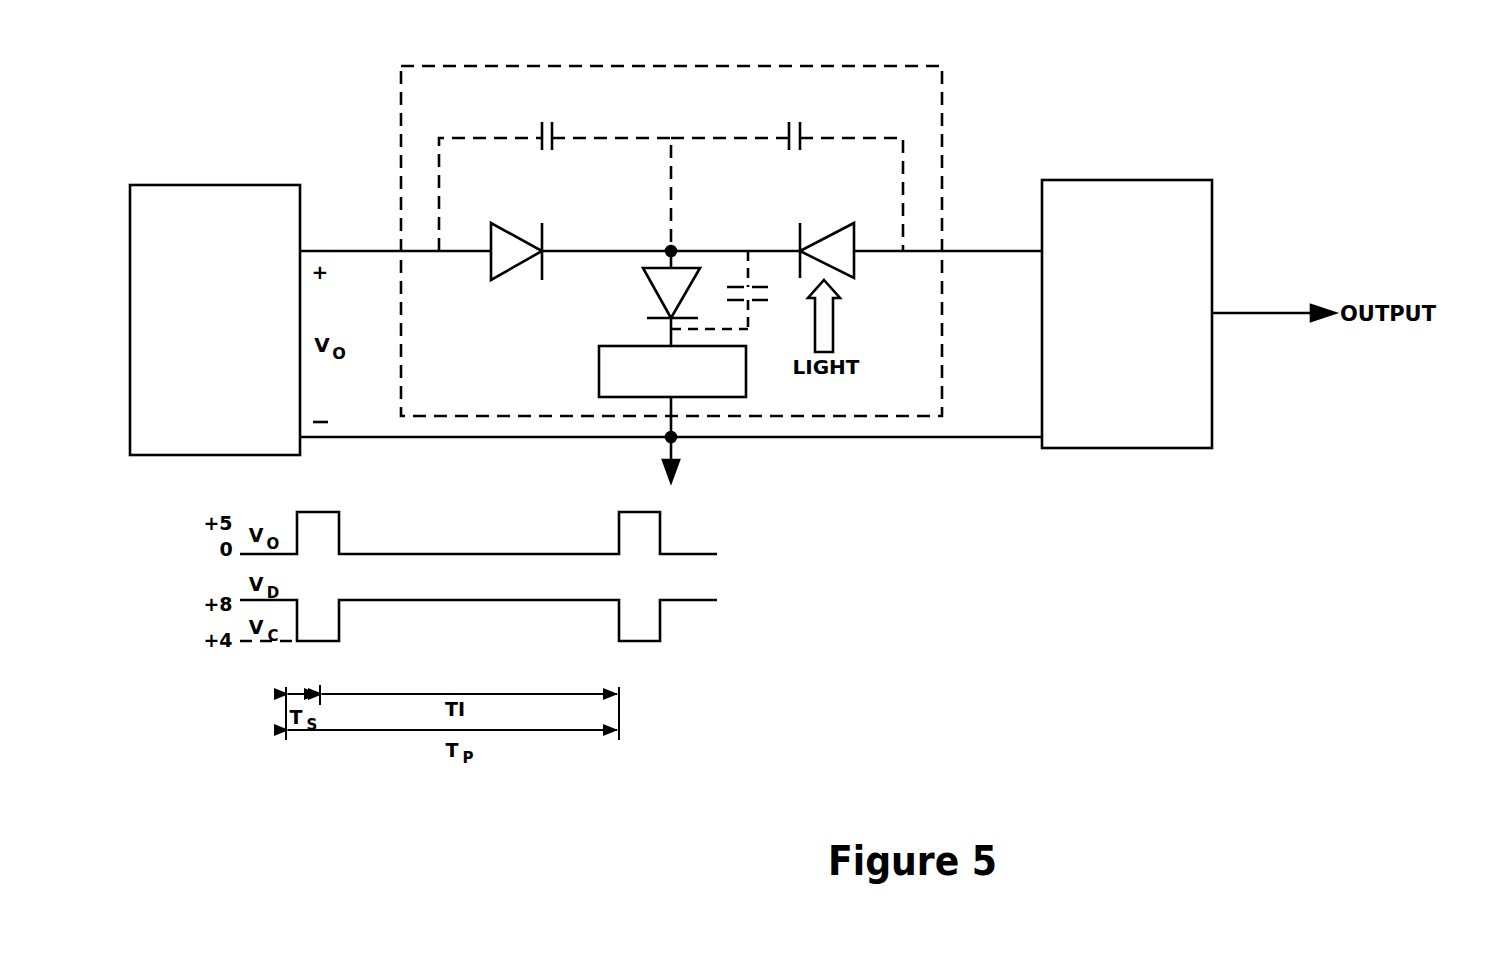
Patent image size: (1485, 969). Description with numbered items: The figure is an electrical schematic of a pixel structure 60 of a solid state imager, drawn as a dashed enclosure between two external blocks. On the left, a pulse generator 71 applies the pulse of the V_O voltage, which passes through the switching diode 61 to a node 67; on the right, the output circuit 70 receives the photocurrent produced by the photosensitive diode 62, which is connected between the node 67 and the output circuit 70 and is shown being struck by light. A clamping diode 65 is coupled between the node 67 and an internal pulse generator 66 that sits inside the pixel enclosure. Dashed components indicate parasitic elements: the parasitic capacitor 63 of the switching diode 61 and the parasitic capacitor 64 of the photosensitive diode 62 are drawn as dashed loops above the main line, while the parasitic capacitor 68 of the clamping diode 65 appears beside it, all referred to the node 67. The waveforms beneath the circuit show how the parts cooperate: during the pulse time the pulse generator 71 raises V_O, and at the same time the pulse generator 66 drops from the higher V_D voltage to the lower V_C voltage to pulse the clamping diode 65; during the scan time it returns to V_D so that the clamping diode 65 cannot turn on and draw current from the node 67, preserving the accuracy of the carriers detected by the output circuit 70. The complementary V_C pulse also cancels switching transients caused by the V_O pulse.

The pixel structure 60 is at (773, 63).
The switching diode 61 is at (518, 270).
The photosensitive diode 62 is at (859, 262).
The parasitic capacitor 63 is at (550, 117).
The parasitic capacitor 64 is at (797, 120).
The clamping diode 65 is at (647, 285).
The pulse generator 66 is at (597, 352).
The node 67 is at (679, 246).
The parasitic capacitor 68 is at (770, 298).
The output circuit 70 is at (1173, 178).
The pulse generator 71 is at (253, 183).